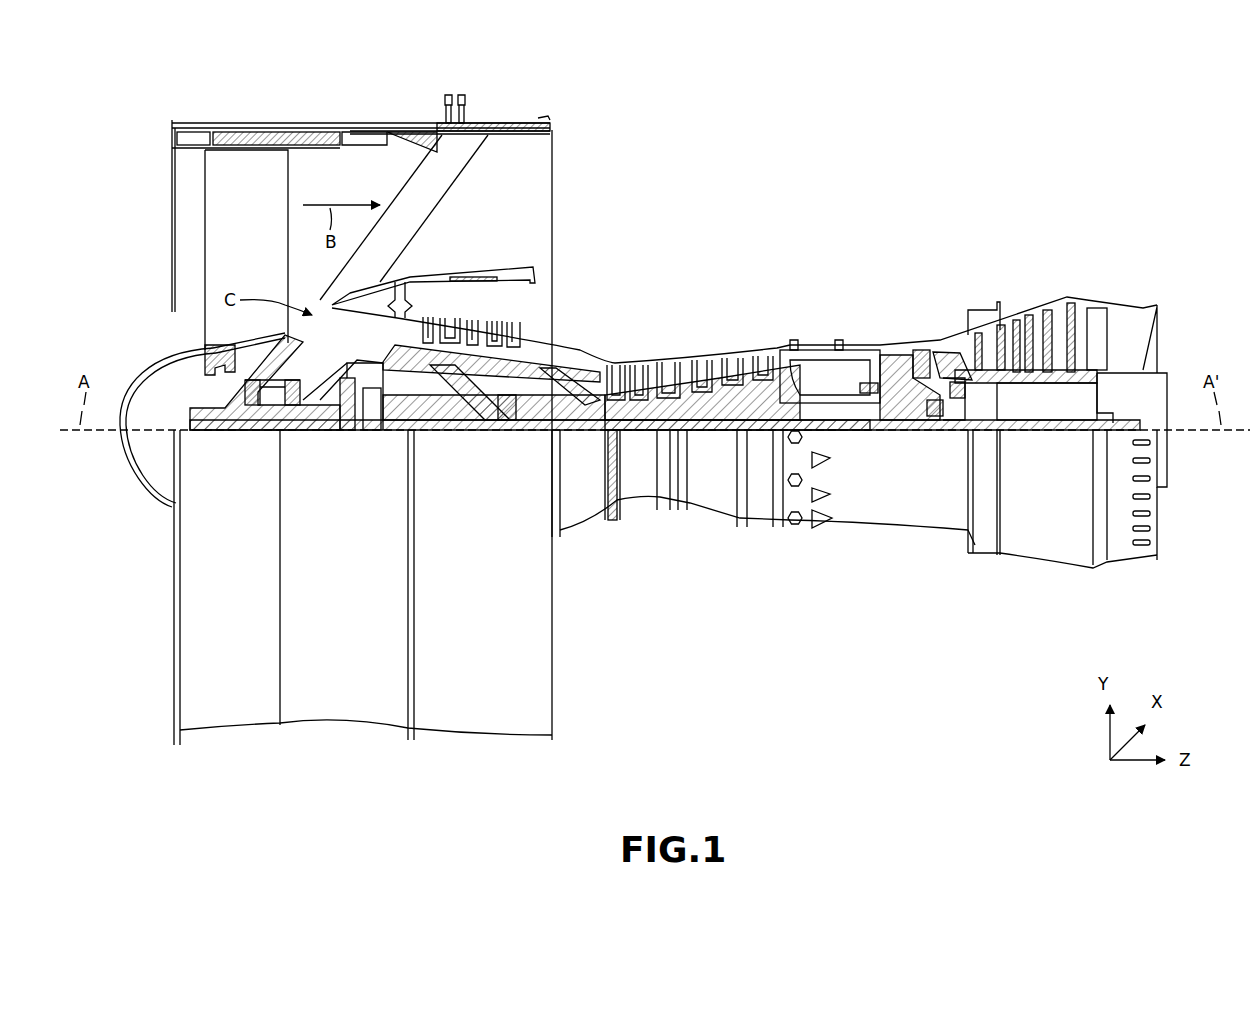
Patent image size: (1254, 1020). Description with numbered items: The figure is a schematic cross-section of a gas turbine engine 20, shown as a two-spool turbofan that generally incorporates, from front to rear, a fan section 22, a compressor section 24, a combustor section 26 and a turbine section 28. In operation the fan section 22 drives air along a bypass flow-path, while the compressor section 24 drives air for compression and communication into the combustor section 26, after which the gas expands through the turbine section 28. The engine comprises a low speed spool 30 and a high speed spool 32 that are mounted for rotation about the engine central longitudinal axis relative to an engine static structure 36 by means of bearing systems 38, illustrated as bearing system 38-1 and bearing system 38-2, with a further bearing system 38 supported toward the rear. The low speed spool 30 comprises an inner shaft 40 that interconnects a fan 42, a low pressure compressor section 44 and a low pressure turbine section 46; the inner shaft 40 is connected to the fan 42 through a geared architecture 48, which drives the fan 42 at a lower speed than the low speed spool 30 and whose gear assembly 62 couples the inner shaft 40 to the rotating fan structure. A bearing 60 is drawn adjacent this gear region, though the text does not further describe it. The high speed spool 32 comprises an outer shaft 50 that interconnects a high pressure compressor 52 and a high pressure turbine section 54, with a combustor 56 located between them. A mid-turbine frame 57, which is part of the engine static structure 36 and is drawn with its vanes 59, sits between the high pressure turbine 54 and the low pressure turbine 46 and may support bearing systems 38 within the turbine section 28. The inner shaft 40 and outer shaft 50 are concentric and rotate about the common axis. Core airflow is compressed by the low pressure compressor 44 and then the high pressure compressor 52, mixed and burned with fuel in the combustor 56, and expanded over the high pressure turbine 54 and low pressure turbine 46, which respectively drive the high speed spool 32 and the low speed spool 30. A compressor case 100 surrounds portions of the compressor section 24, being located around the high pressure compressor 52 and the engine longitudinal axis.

The gas turbine engine 20 is at (884, 162).
The fan section 22 is at (406, 100).
The compressor section 24 is at (415, 235).
The combustor section 26 is at (890, 235).
The turbine section 28 is at (1100, 235).
The low speed spool 30 is at (720, 445).
The high speed spool 32 is at (755, 395).
The engine static structure 36 is at (342, 708).
The bearing system 38 is at (945, 432).
The bearing system 38-1 is at (258, 435).
The bearing system 38-2 is at (505, 437).
The inner shaft 40 is at (572, 432).
The fan 42 is at (246, 250).
The low pressure compressor section 44 is at (490, 332).
The low pressure turbine section 46 is at (1030, 322).
The geared architecture 48 is at (372, 455).
The outer shaft 50 is at (830, 412).
The high pressure compressor 52 is at (698, 395).
The high pressure turbine section 54 is at (913, 348).
The combustor 56 is at (830, 365).
The mid-turbine frame 57 is at (945, 350).
The airfoils/vanes 59 is at (952, 310).
The bearing 60 is at (405, 428).
The gear assembly 62 is at (365, 388).
The compressor case 100 is at (640, 382).